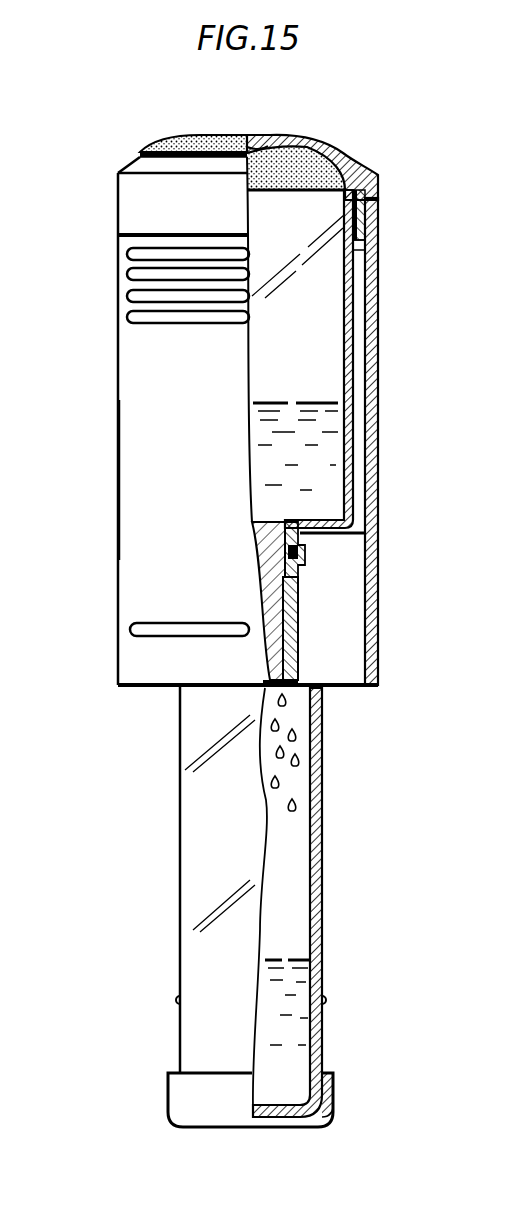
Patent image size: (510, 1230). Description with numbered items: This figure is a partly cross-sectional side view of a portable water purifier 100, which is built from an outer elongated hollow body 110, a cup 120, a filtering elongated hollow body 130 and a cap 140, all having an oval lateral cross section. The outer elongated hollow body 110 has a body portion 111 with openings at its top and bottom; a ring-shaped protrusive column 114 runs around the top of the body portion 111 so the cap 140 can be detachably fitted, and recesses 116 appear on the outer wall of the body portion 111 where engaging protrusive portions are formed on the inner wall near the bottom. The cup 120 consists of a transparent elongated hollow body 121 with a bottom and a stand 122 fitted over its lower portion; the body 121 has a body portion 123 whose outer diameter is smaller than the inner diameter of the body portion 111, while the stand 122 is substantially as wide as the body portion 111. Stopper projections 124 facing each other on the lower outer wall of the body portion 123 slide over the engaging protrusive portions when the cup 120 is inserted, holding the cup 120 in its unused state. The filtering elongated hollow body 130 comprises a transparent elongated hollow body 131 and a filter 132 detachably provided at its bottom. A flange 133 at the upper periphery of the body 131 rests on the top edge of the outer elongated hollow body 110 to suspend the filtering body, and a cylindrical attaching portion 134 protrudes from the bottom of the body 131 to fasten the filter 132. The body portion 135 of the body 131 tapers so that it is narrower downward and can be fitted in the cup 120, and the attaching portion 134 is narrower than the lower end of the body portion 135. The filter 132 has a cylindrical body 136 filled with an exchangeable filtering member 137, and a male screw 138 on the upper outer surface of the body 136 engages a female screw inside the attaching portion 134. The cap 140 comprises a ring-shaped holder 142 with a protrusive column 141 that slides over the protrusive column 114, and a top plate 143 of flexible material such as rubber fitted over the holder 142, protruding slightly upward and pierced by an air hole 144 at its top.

The portable water purifier 100 is at (225, 99).
The outer elongated hollow body 110 is at (112, 343).
The body portion 111 is at (137, 477).
The ring-shaped protrusive column 114 is at (372, 210).
The recesses 116 is at (158, 628).
The cup 120 is at (172, 888).
The transparent elongated hollow body 121 is at (314, 848).
The stand 122 is at (203, 1110).
The body portion 123 is at (178, 930).
The stopper projections 124 is at (175, 1003).
The filtering elongated hollow body 130 is at (364, 342).
The transparent elongated hollow body 131 is at (355, 300).
The filter 132 is at (310, 631).
The flange 133 is at (377, 194).
The cylindrical attaching portion 134 is at (305, 547).
The body portion 135 is at (351, 460).
The cylindrical body 136 is at (297, 655).
The filtering member 137 is at (285, 598).
The male screw 138 is at (303, 533).
The cap 140 is at (108, 214).
The protrusive column 141 is at (352, 262).
The ring-shaped holder 142 is at (140, 203).
The top plate 143 is at (314, 138).
The air hole 144 is at (248, 156).